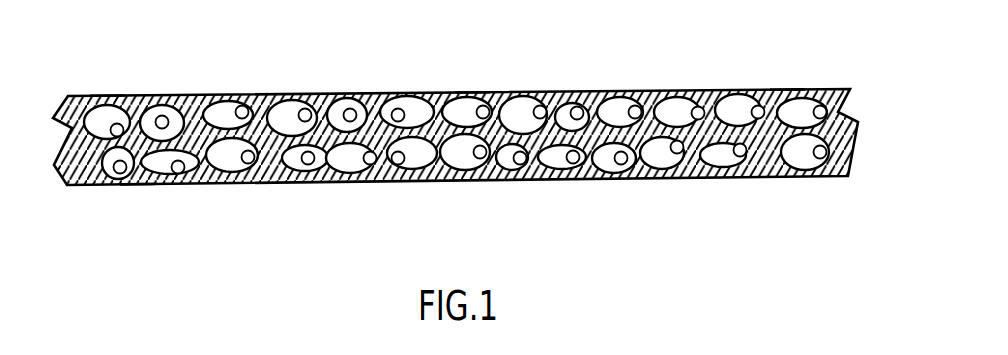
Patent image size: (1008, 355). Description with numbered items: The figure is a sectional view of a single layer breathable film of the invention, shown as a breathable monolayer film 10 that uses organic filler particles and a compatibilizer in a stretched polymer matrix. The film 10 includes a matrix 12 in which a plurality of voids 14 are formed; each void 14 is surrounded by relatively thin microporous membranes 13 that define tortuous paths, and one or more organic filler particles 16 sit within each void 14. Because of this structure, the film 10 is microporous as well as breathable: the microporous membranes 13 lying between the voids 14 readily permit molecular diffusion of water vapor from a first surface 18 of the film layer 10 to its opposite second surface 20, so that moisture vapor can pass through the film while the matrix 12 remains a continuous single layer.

The breathable monolayer film 10 is at (853, 173).
The matrix 12 is at (787, 89).
The microporous membranes 13 is at (472, 92).
The voids 14 is at (548, 163).
The organic filler particles 16 is at (587, 178).
The first surface 18 is at (107, 95).
The second surface 20 is at (137, 185).